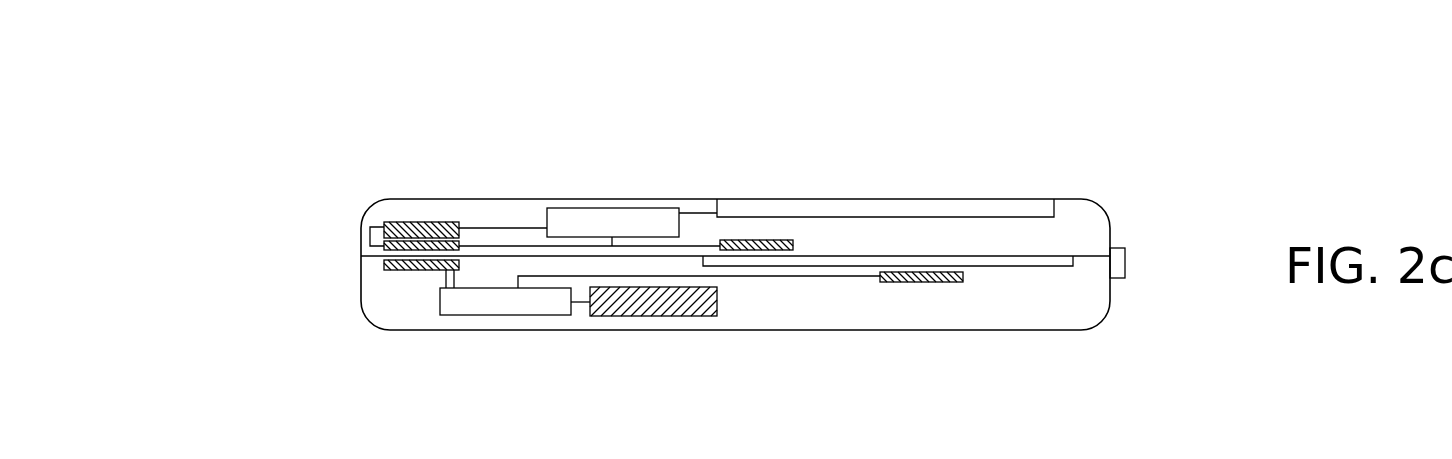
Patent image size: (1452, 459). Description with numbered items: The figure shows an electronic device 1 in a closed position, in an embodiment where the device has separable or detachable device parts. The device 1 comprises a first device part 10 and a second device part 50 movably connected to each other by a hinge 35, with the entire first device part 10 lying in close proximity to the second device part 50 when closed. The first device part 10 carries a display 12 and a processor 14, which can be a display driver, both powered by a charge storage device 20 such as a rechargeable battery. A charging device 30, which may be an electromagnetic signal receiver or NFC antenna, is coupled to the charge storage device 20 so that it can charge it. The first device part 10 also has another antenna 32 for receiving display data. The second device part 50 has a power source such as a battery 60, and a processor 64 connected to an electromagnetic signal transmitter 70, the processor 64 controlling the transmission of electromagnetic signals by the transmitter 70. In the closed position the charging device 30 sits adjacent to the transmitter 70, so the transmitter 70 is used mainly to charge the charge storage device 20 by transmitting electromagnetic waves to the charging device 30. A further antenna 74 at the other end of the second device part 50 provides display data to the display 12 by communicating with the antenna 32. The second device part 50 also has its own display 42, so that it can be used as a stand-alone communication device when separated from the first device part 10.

The electronic device 1 is at (282, 159).
The first device part 10 is at (1092, 212).
The display 12 is at (908, 198).
The processor 14 is at (612, 213).
The charge storage device 20 is at (428, 232).
The charging device 30 is at (459, 246).
The antenna 32 is at (748, 242).
The hinge 35 is at (1122, 265).
The display 42 is at (993, 260).
The second device part 50 is at (903, 323).
The battery 60 is at (640, 316).
The processor 64 is at (504, 313).
The electromagnetic signal transmitter 70 is at (398, 268).
The antenna 74 is at (890, 282).